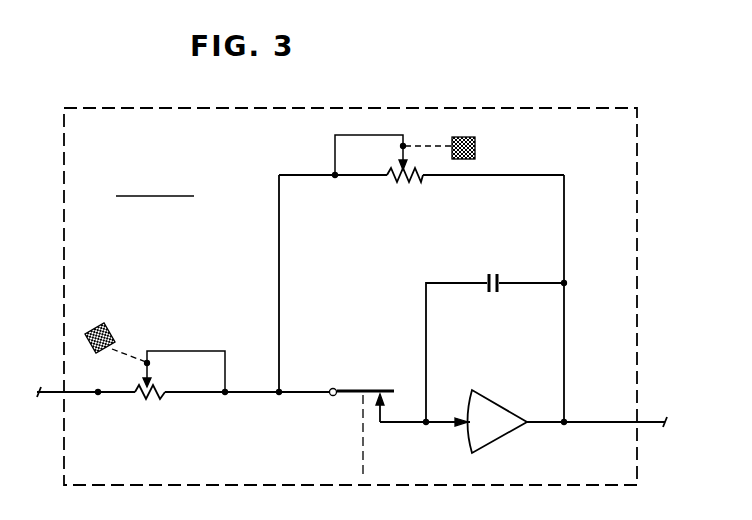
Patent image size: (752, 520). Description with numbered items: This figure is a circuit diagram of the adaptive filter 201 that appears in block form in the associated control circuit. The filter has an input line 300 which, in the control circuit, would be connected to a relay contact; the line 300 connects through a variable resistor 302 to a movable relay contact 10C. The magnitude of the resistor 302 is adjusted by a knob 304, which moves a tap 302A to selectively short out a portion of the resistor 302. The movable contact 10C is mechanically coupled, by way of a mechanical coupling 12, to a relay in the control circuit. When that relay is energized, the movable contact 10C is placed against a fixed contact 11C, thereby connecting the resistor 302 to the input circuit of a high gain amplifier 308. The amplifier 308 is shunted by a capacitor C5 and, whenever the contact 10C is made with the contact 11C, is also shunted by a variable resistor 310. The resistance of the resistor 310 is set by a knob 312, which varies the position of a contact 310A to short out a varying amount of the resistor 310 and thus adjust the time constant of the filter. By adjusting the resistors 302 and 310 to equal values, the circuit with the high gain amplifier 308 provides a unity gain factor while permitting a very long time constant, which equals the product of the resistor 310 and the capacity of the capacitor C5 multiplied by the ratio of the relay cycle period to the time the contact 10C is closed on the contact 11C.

The filter 201 is at (637, 235).
The input line 300 is at (98, 392).
The variable resistor 302 is at (147, 395).
The tap 302A is at (148, 366).
The knob 304 is at (116, 322).
The movable relay contact 10C is at (352, 389).
The fixed contact 11C is at (383, 414).
The mechanical coupling 12 is at (360, 447).
The high gain amplifier 308 is at (505, 407).
The variable resistor 310 is at (403, 180).
The contact 310A is at (400, 150).
The knob 312 is at (470, 135).
The capacitor C5 is at (495, 339).